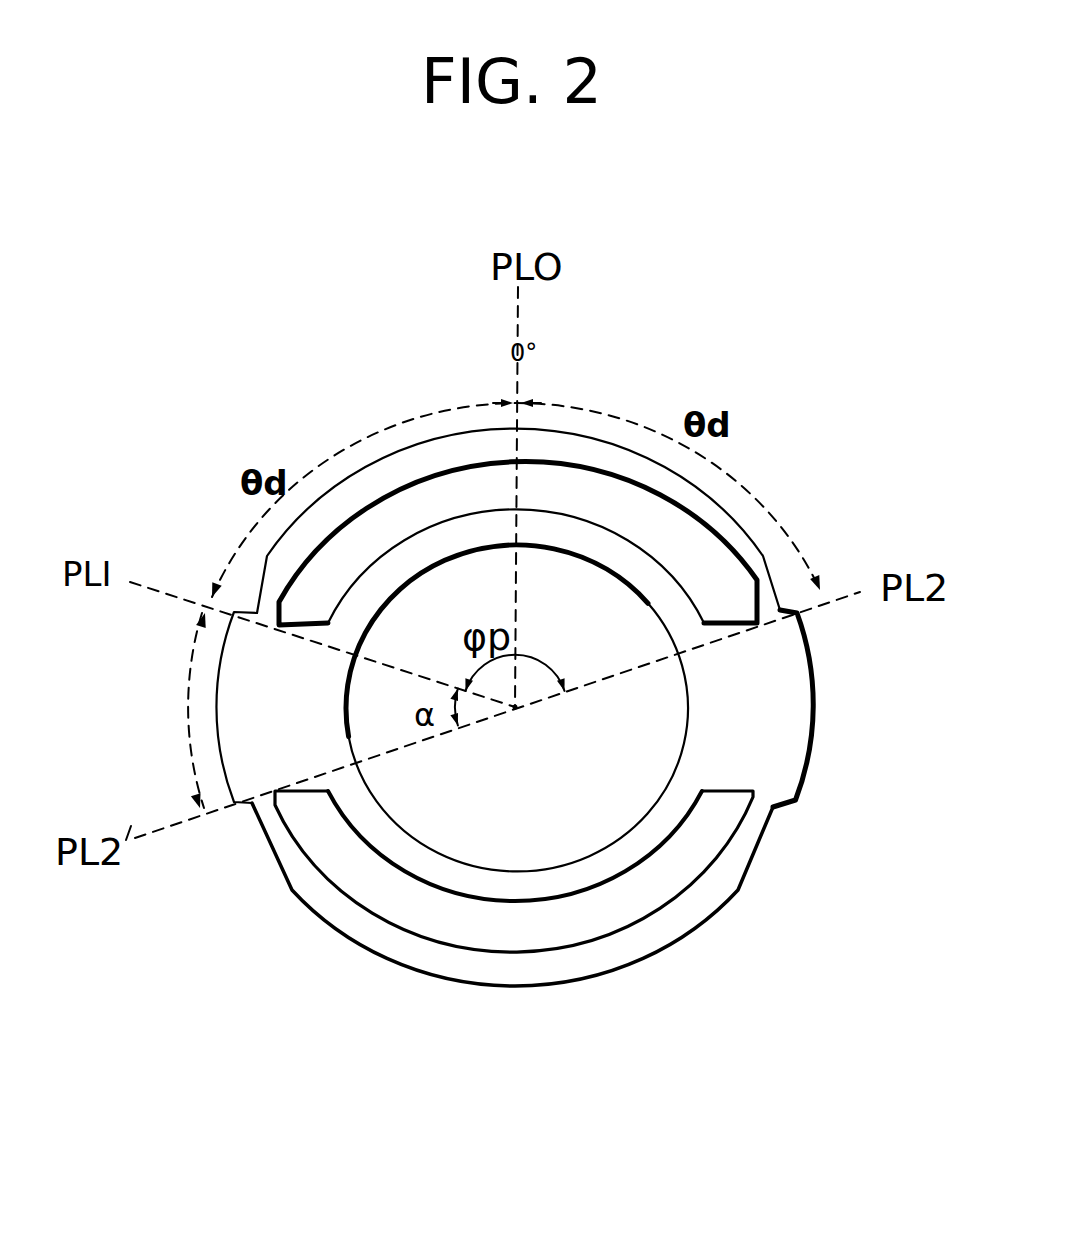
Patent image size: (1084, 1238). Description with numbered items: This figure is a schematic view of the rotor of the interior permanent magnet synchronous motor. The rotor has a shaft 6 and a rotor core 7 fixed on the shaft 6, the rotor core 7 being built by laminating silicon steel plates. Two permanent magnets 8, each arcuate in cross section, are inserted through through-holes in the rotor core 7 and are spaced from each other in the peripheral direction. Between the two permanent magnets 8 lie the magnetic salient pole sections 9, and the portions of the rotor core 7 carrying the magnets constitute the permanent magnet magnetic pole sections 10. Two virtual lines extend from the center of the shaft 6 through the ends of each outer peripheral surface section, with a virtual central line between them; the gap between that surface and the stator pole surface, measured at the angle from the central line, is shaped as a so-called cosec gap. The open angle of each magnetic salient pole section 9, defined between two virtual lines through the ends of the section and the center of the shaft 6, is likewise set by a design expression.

The shaft 6 is at (502, 843).
The rotor core 7 is at (776, 691).
The permanent magnets 8 is at (675, 538).
The magnetic salient pole sections 9 is at (773, 750).
The permanent magnet magnetic pole sections 10 is at (607, 458).